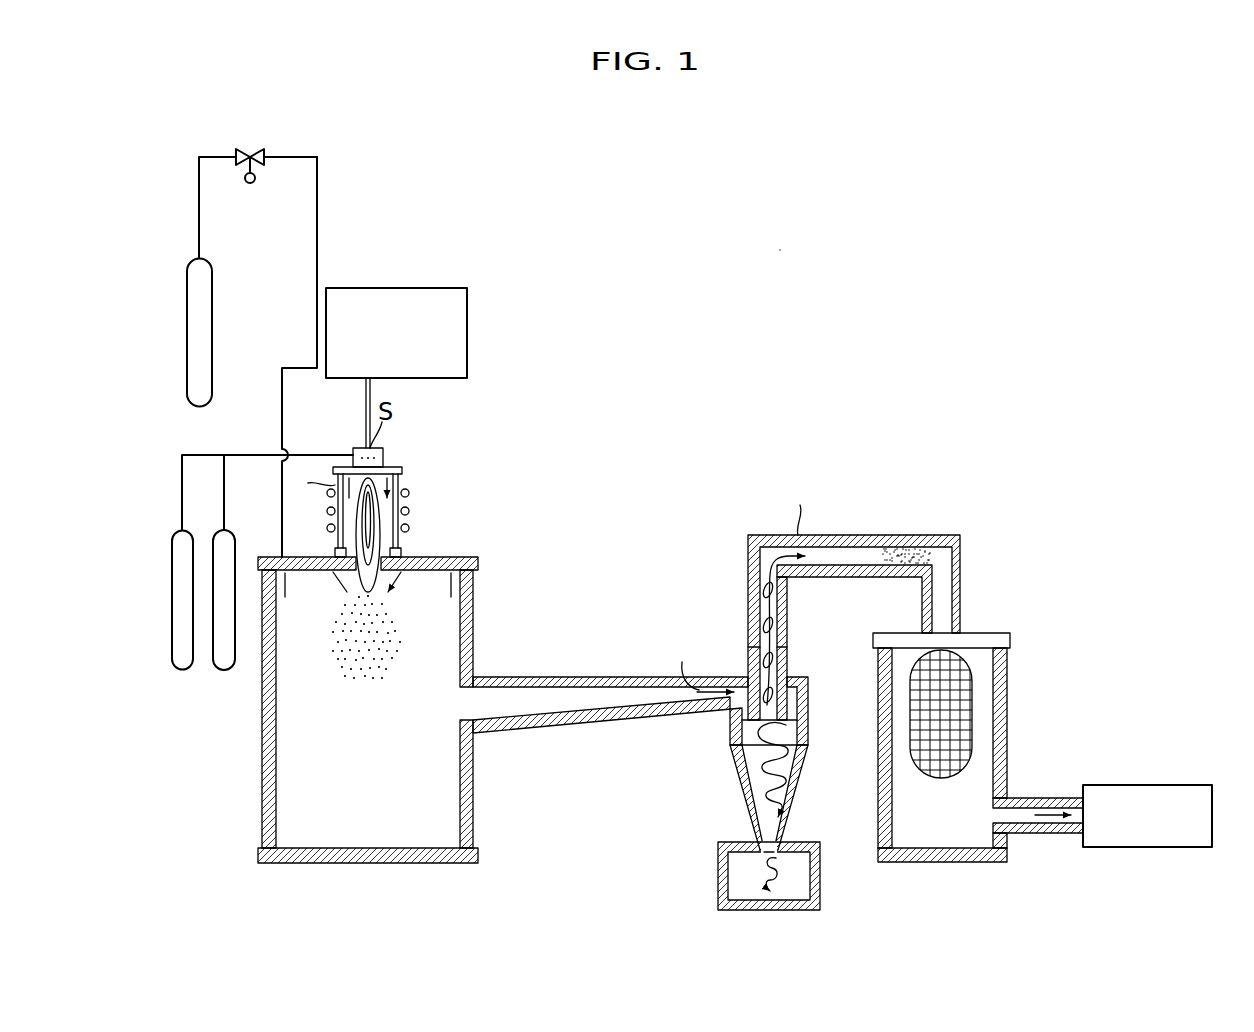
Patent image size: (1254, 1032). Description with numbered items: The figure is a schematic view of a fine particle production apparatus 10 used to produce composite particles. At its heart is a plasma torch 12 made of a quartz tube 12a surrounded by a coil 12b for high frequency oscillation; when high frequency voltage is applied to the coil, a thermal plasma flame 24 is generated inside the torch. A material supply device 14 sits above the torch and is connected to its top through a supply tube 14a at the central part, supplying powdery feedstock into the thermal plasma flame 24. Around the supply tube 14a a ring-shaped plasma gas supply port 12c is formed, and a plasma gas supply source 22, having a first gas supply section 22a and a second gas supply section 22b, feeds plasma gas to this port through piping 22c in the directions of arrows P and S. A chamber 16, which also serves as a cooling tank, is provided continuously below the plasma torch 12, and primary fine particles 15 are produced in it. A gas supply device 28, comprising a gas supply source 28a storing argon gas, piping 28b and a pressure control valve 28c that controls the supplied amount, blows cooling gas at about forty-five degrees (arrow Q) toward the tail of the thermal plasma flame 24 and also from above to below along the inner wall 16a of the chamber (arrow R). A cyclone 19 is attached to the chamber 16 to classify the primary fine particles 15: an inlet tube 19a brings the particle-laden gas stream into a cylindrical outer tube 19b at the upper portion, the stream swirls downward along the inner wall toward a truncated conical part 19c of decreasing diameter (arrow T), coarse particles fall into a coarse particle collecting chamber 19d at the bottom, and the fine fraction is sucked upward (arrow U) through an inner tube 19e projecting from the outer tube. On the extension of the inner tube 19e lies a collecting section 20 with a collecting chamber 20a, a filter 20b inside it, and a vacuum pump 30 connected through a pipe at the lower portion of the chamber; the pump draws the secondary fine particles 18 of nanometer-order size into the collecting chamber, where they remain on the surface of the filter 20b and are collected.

The production apparatus 10 is at (779, 251).
The plasma torch 12 is at (421, 479).
The quartz tube 12a is at (400, 545).
The coil for high frequency oscillation 12b is at (410, 506).
The plasma gas supply port 12c is at (384, 468).
The material supply device 14 is at (468, 317).
The supply tube 14a is at (366, 413).
The primary fine particles 15 is at (343, 648).
The chamber 16 is at (410, 710).
The inner wall 16a is at (452, 828).
The secondary fine particles 18 is at (913, 537).
The cyclone 19 is at (737, 666).
The inlet tube 19a is at (722, 713).
The outer tube 19b is at (806, 706).
The truncated conical part 19c is at (801, 796).
The coarse particle collecting chamber 19d is at (806, 878).
The inner tube 19e is at (789, 656).
The collecting section 20 is at (906, 630).
The collecting chamber 20a is at (967, 784).
The filter 20b is at (970, 719).
The plasma gas supply source 22 is at (151, 486).
The first gas supply section 22a is at (183, 672).
The second gas supply section 22b is at (223, 672).
The piping 22c is at (232, 455).
The thermal plasma flame 24 is at (350, 531).
The gas supply device 28 is at (284, 137).
The gas supply source 28a is at (186, 340).
The piping 28b is at (295, 357).
The pressure control valve 28c is at (250, 151).
The vacuum pump 30 is at (1101, 785).